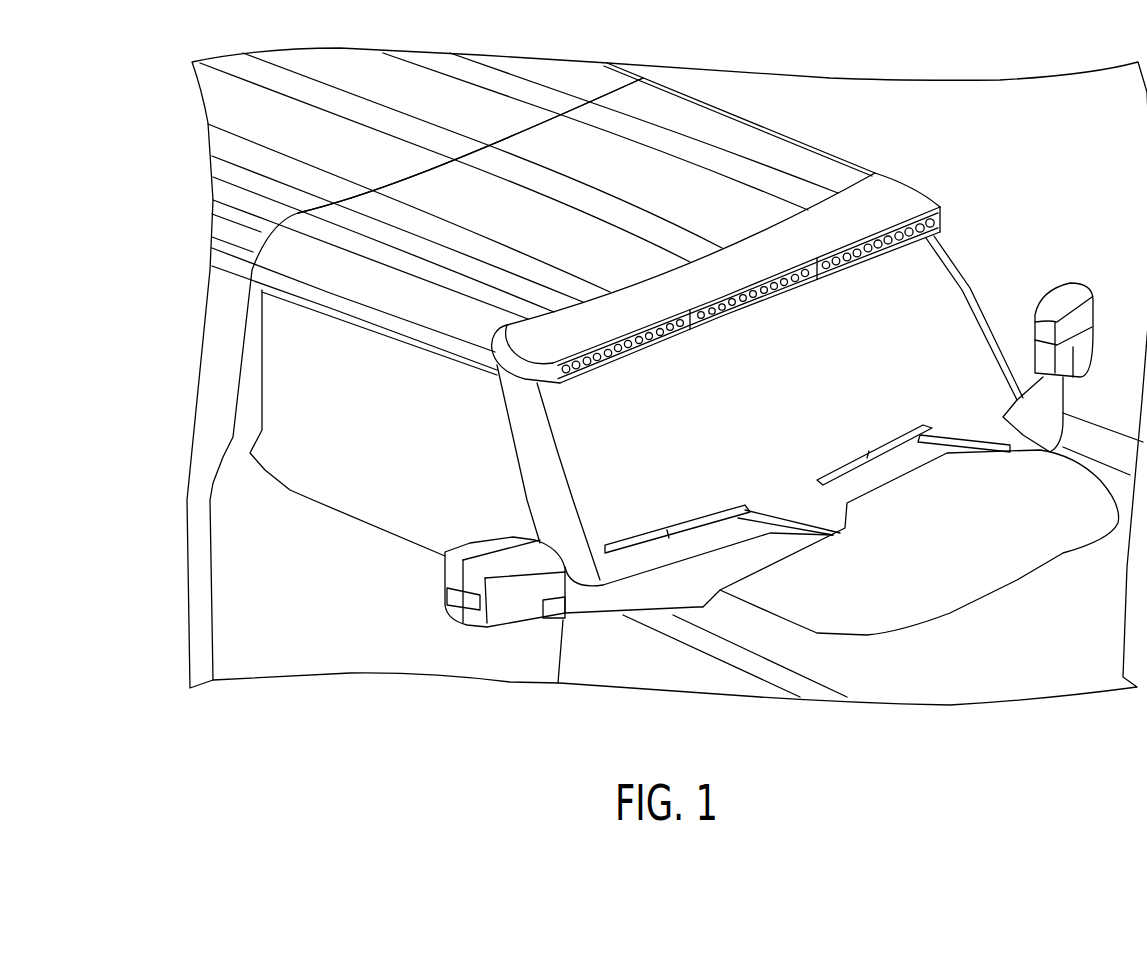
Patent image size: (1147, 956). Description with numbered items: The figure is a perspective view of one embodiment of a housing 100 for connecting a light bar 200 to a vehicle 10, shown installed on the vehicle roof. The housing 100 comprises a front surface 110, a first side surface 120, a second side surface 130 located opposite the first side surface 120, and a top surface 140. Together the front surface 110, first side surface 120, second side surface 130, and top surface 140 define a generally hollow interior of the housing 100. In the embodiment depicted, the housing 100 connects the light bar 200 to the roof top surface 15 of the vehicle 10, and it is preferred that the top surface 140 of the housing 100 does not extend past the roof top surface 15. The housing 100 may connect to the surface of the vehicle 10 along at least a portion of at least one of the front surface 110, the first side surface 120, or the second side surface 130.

The vehicle 10 is at (983, 277).
The roof top surface 15 is at (747, 215).
The housing 100 is at (708, 284).
The front surface 110 is at (558, 375).
The first side surface 120 is at (513, 362).
The second side surface 130 is at (918, 192).
The top surface 140 is at (883, 193).
The light bar 200 is at (666, 337).